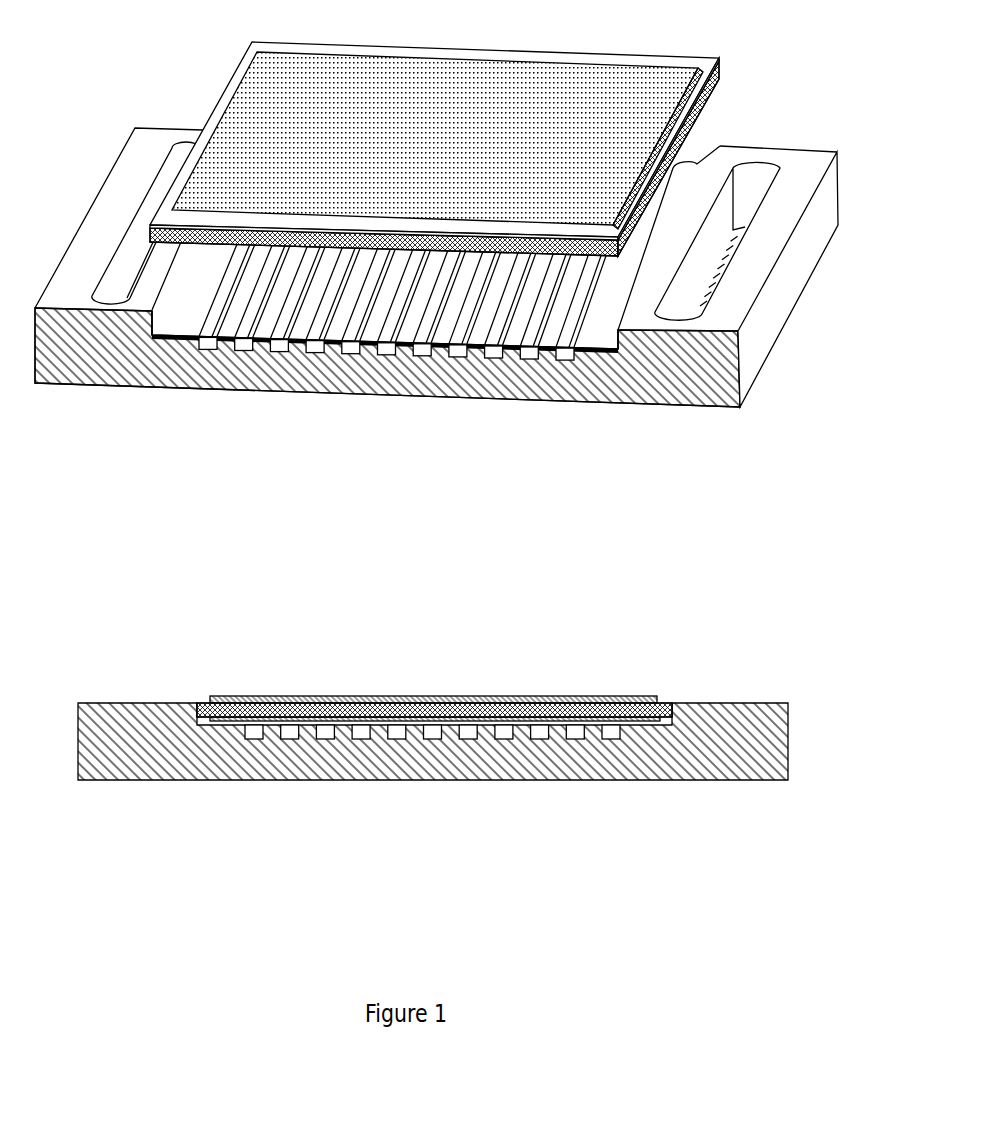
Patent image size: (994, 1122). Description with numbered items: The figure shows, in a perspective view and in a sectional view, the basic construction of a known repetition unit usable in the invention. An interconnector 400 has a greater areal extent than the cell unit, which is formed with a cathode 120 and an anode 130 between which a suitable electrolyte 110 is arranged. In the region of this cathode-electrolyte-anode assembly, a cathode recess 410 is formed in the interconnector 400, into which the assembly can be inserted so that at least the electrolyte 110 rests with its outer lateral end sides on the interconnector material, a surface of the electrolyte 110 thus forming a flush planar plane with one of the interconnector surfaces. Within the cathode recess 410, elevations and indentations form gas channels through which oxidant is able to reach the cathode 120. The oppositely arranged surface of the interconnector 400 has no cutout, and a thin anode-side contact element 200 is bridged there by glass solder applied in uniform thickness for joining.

The electrolyte 110 is at (475, 232).
The cathode 120 is at (567, 247).
The anode 130 is at (448, 118).
The anode-side contact element 200 is at (480, 355).
The interconnector 400 is at (590, 393).
The cathode recess 410 is at (195, 340).